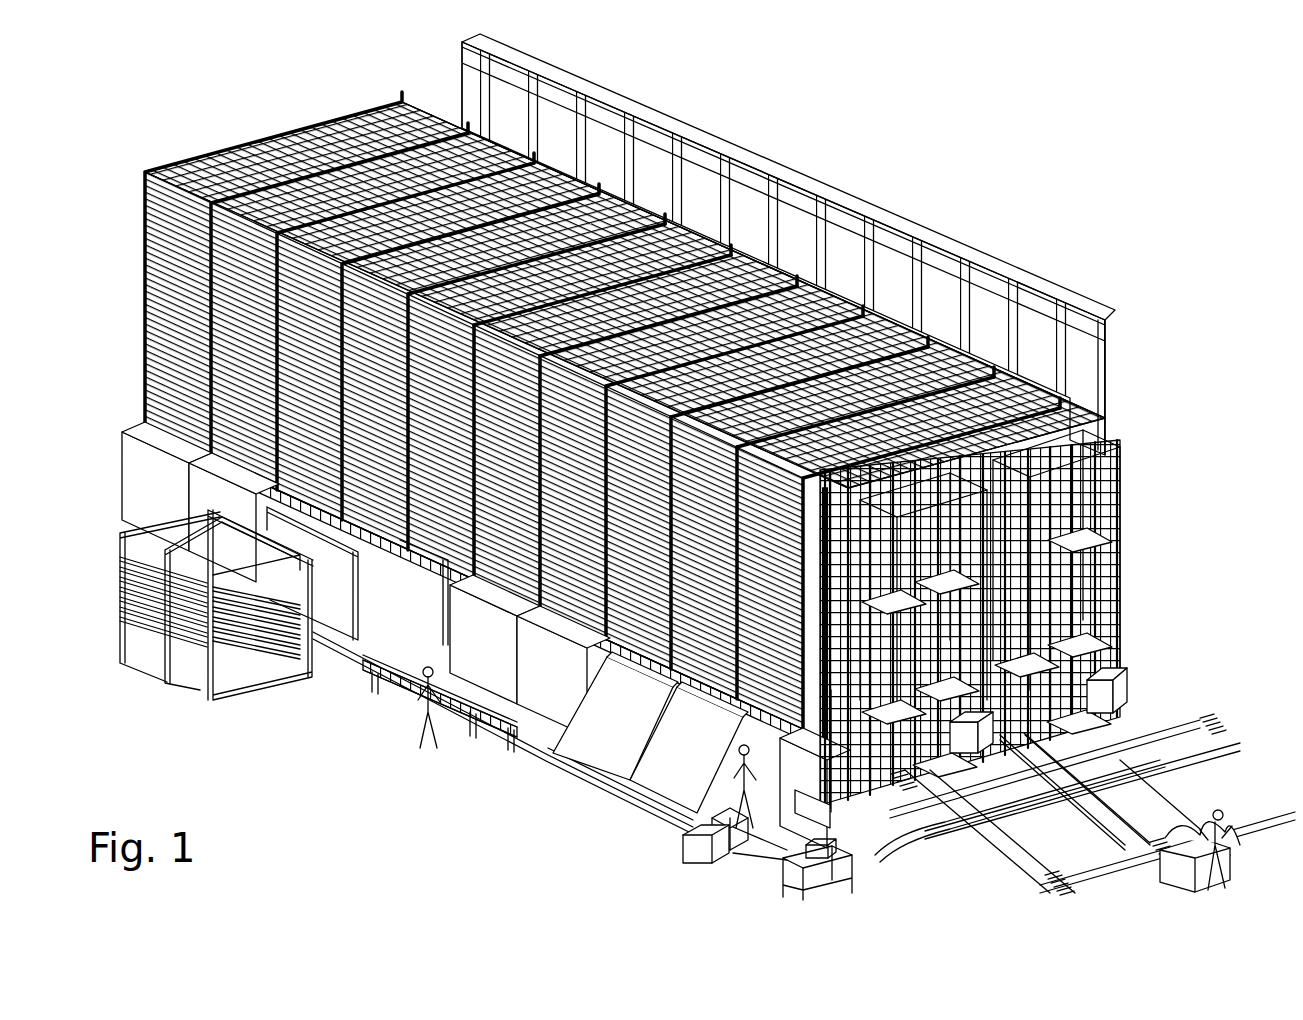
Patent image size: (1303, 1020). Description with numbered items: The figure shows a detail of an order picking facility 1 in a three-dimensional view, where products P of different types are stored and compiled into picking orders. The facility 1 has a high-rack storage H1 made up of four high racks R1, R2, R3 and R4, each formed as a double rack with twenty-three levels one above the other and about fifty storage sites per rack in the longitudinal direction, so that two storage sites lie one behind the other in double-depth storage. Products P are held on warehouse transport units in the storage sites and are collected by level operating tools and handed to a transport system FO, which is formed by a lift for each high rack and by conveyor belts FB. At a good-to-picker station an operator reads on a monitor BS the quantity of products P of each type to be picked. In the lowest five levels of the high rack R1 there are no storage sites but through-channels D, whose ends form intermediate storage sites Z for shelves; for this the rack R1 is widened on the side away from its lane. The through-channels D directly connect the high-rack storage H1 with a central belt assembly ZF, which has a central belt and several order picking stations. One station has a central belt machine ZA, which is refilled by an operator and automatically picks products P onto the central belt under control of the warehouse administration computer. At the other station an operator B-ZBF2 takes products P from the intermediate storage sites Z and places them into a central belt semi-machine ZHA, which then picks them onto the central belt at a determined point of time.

The order picking facility 1 is at (980, 146).
The high rack R1 is at (160, 160).
The high rack R2 is at (215, 135).
The high rack R3 is at (285, 117).
The high rack R4 is at (358, 103).
The products P is at (427, 122).
The high-rack storage H1 is at (128, 312).
The central belt assembly ZF is at (117, 552).
The through-channel D is at (254, 697).
The intermediate storage site Z is at (318, 676).
The operator B-ZBF2 is at (423, 722).
The central belt semi-machine ZHA is at (461, 740).
The central belt machine ZA is at (700, 813).
The transport system FO is at (1242, 666).
The conveyor belts FB is at (1153, 755).
The monitor BS is at (1215, 813).